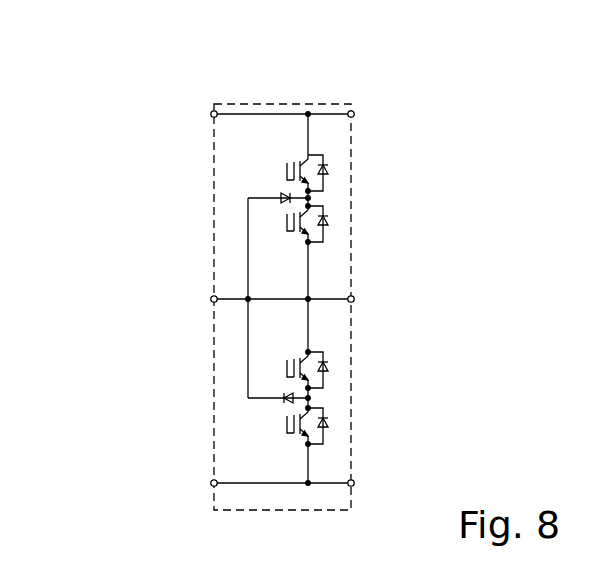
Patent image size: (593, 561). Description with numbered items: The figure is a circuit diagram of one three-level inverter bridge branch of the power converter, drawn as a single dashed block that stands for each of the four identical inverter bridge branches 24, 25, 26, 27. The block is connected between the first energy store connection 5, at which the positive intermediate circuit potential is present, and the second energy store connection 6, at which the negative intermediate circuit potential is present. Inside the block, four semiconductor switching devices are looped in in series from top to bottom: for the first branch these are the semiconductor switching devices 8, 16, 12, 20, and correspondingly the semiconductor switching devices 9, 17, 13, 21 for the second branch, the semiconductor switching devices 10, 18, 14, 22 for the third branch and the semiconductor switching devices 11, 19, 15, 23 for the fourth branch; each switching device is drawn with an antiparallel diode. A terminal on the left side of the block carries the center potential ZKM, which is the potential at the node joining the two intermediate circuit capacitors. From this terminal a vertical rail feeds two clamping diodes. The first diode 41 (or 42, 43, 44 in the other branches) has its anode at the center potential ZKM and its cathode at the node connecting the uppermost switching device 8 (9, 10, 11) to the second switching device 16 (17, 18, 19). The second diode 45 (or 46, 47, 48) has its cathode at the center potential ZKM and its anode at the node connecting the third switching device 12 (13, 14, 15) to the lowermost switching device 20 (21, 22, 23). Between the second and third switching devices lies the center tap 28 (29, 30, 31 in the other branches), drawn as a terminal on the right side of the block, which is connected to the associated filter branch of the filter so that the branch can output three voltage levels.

The first energy store connection 5 is at (211, 114).
The second energy store connection 6 is at (211, 483).
The center potential ZKM is at (211, 298).
The semiconductor switching device 8 is at (304, 162).
The semiconductor switching device 9 is at (391, 174).
The semiconductor switching device 10 is at (391, 174).
The semiconductor switching device 11 is at (331, 168).
The semiconductor switching device 16 is at (407, 225).
The semiconductor switching device 17 is at (407, 225).
The semiconductor switching device 18 is at (407, 225).
The semiconductor switching device 19 is at (331, 221).
The semiconductor switching device 12 is at (412, 371).
The semiconductor switching device 13 is at (412, 371).
The semiconductor switching device 14 is at (412, 371).
The semiconductor switching device 15 is at (331, 362).
The semiconductor switching device 20 is at (324, 437).
The semiconductor switching device 21 is at (412, 427).
The semiconductor switching device 22 is at (412, 427).
The semiconductor switching device 23 is at (331, 420).
The inverter bridge branch 24 is at (310, 268).
The inverter bridge branch 25 is at (310, 268).
The inverter bridge branch 26 is at (310, 268).
The inverter bridge branch 27 is at (291, 103).
The center tap 28 is at (428, 297).
The center tap 29 is at (428, 297).
The center tap 30 is at (428, 297).
The center tap 31 is at (354, 299).
The first diode 41 is at (165, 185).
The first diode 42 is at (165, 185).
The first diode 43 is at (165, 185).
The first diode 44 is at (283, 196).
The second diode 45 is at (166, 412).
The second diode 46 is at (166, 412).
The second diode 47 is at (166, 412).
The second diode 48 is at (283, 400).